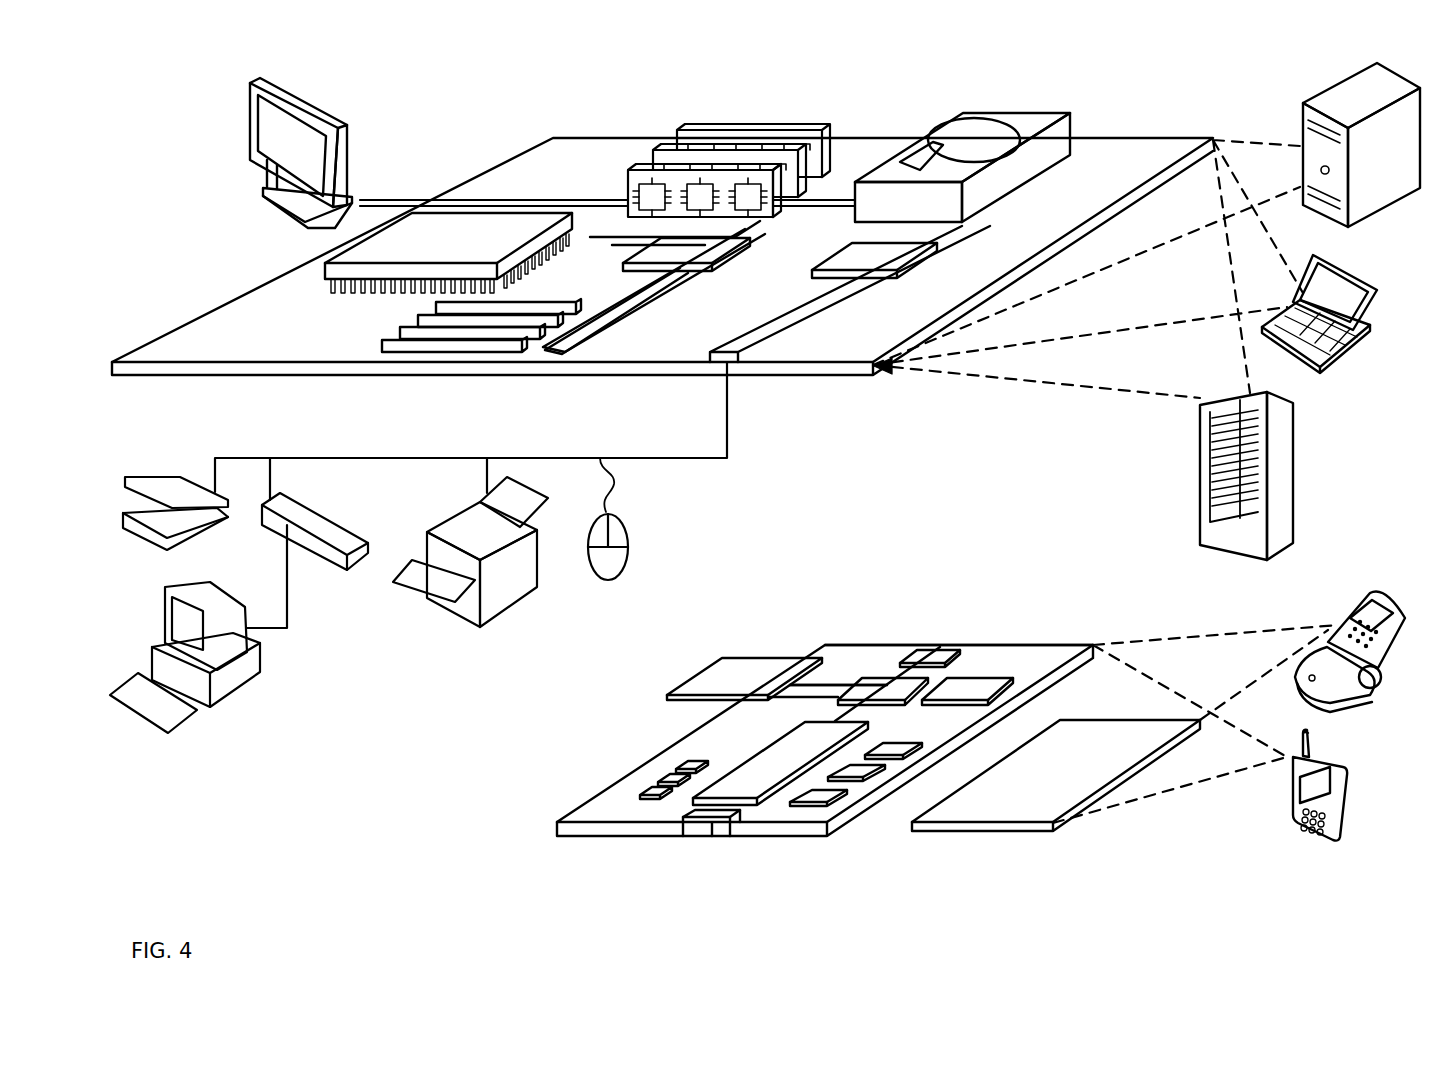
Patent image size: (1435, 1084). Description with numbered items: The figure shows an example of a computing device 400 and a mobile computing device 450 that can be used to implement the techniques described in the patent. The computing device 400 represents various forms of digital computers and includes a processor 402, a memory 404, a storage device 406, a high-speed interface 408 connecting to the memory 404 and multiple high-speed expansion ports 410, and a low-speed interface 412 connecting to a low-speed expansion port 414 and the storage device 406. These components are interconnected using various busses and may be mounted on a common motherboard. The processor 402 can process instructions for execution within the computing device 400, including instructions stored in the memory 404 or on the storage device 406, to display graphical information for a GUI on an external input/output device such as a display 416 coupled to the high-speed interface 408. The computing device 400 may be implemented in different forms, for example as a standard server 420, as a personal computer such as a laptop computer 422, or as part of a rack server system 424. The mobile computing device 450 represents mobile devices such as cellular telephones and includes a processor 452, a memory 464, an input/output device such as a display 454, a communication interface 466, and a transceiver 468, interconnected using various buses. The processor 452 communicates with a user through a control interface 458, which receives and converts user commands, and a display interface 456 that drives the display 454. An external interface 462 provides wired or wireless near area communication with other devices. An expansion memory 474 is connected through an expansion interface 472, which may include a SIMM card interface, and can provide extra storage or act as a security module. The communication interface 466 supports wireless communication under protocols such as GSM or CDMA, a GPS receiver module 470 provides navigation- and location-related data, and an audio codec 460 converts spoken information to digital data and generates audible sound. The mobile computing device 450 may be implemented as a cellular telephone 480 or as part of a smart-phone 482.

The computing device 400 is at (467, 107).
The processor 402 is at (325, 266).
The memory 404 is at (690, 128).
The storage device 406 is at (956, 113).
The high-speed interface 408 is at (650, 240).
The high-speed expansion ports 410 is at (400, 343).
The low-speed interface 412 is at (853, 255).
The low-speed expansion port 414 is at (760, 365).
The display 416 is at (250, 76).
The standard server 420 is at (1303, 125).
The laptop computer 422 is at (1346, 275).
The rack server system 424 is at (1206, 502).
The mobile computing device 450 is at (523, 838).
The processor 452 is at (752, 788).
The display 454 is at (1016, 812).
The display interface 456 is at (824, 798).
The control interface 458 is at (860, 774).
The audio codec 460 is at (886, 751).
The external interface 462 is at (712, 820).
The memory 464 is at (652, 798).
The communication interface 466 is at (880, 692).
The transceiver 468 is at (971, 692).
The GPS receiver module 470 is at (929, 654).
The expansion interface 472 is at (799, 665).
The expansion memory 474 is at (739, 660).
The cellular telephone 480 is at (1356, 606).
The smart-phone 482 is at (1296, 780).